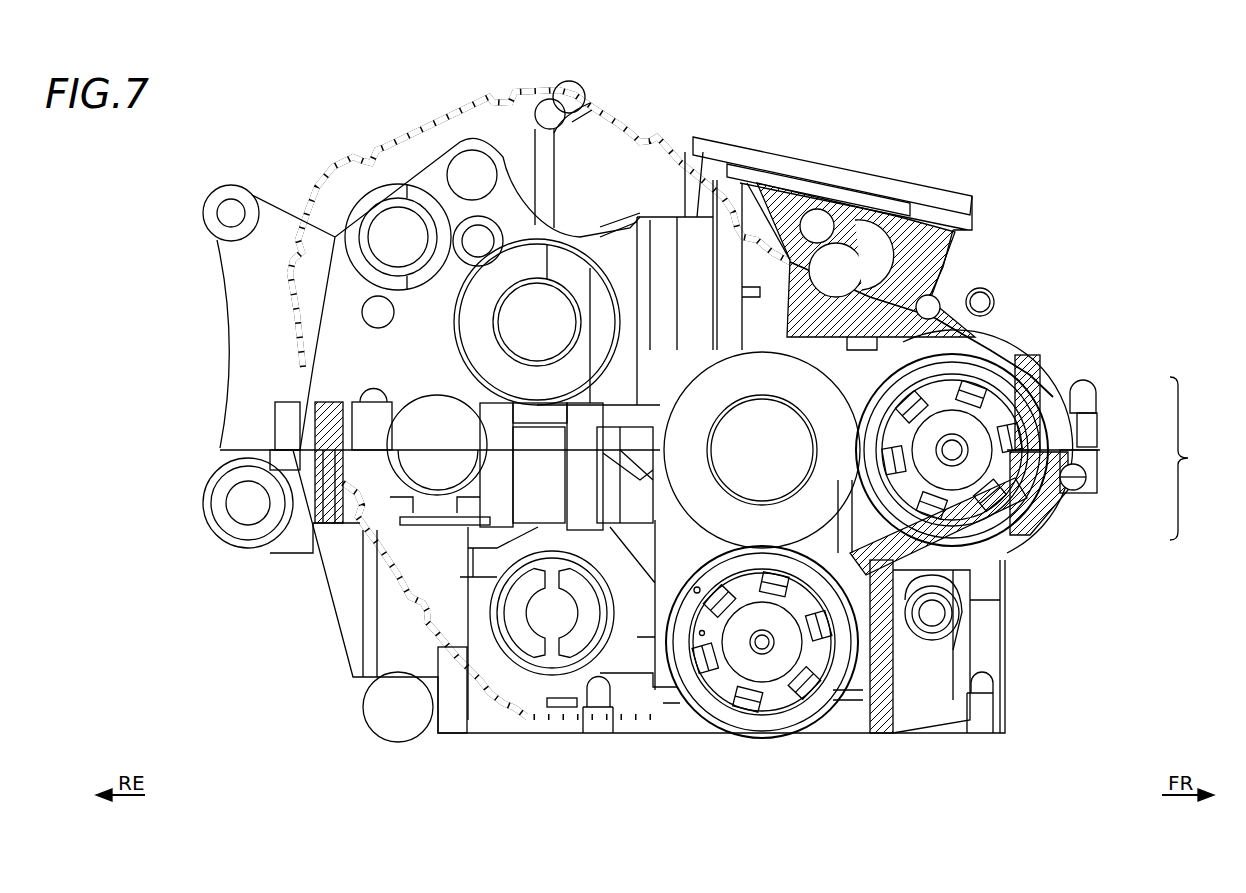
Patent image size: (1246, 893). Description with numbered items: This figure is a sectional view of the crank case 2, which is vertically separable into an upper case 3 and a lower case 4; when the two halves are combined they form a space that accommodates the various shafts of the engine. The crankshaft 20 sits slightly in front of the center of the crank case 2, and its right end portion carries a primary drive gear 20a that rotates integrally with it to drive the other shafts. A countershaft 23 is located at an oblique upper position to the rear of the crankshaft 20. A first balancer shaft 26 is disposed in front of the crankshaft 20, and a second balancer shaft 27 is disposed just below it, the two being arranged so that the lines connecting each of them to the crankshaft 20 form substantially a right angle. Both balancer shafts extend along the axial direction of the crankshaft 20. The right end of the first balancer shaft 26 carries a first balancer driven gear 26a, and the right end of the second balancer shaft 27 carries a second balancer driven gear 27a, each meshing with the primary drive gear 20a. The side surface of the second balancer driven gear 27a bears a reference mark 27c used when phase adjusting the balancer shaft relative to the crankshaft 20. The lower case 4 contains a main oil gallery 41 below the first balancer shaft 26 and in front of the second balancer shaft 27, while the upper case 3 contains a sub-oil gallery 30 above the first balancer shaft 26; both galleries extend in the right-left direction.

The crank case 2 is at (1189, 458).
The upper case 3 is at (1067, 380).
The lower case 4 is at (1022, 523).
The crankshaft 20 is at (765, 450).
The primary drive gear 20a is at (827, 390).
The countershaft 23 is at (538, 327).
The first balancer shaft 26 is at (952, 450).
The first balancer driven gear 26a is at (978, 362).
The second balancer shaft 27 is at (763, 647).
The second balancer driven gear 27a is at (717, 723).
The reference mark 27c is at (697, 592).
The sub-oil gallery 30 is at (928, 307).
The main oil gallery 41 is at (932, 615).